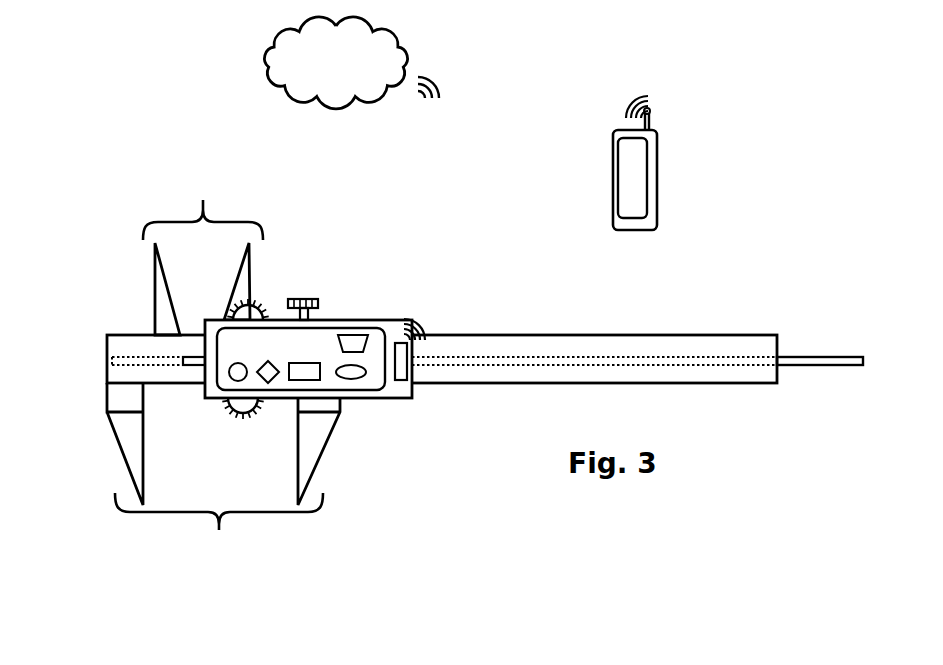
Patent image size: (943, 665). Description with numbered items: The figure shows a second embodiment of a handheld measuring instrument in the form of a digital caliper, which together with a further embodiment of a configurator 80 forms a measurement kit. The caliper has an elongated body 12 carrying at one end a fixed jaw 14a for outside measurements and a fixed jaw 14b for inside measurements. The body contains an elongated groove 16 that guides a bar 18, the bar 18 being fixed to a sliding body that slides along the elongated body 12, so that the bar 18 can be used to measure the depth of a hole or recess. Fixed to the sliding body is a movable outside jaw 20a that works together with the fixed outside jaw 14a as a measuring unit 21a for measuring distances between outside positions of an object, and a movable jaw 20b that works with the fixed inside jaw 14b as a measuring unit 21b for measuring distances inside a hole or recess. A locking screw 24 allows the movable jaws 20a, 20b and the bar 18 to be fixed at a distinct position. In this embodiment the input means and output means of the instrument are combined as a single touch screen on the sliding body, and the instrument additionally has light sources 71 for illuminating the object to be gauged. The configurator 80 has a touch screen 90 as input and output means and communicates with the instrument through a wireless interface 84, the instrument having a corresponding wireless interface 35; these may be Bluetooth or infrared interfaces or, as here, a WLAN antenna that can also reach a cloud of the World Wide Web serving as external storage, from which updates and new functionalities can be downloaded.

The configurator 80 is at (672, 197).
The wireless interface 84 is at (652, 124).
The touch screen 90 is at (636, 160).
The elongated body 12 is at (120, 342).
The fixed jaw for outside measurements 14a is at (130, 433).
The fixed jaw for inside measurements 14b is at (162, 302).
The elongated groove 16 is at (110, 368).
The bar 18 is at (560, 360).
The movable outside jaw 20a is at (310, 440).
The movable jaw 20b is at (243, 292).
The measuring unit 21a is at (219, 531).
The measuring unit 21b is at (203, 205).
The locking screw 24 is at (318, 302).
The wireless interface 35 is at (420, 337).
The light sources 71 is at (251, 315).